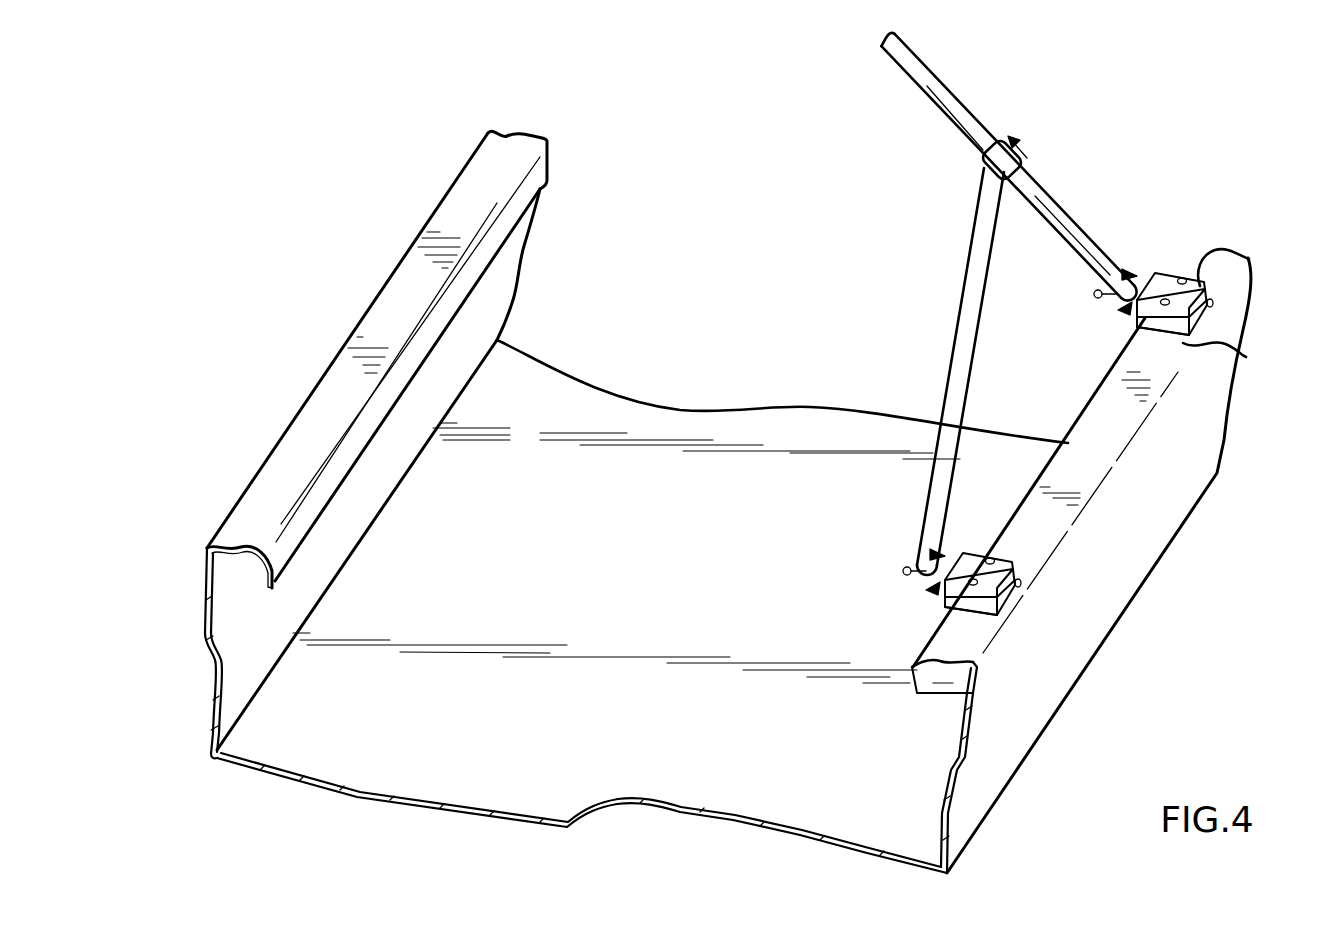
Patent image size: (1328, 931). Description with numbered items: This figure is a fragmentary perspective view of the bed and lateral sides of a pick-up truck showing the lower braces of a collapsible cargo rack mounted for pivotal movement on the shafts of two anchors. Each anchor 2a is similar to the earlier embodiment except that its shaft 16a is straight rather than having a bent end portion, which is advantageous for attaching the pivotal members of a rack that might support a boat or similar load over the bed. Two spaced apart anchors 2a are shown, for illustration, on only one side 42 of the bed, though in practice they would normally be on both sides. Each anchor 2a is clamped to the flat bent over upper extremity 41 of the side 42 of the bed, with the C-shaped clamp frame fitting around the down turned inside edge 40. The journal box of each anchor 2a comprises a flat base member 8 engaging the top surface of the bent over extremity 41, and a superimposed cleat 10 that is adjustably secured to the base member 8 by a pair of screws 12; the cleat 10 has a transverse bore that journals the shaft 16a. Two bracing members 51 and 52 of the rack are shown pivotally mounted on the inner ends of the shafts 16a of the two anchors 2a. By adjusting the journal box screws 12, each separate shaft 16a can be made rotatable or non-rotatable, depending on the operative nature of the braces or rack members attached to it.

The anchor 2a is at (1226, 293).
The flat base member 8 is at (1183, 341).
The cleat 10 is at (1156, 280).
The screws 12 is at (1183, 281).
The straight shaft 16a is at (1097, 298).
The down turned inside edge 40 is at (912, 689).
The flat bent over upper extremity 41 is at (1082, 451).
The side of the bed 42 is at (1035, 646).
The bracing member 51 is at (962, 388).
The bracing member 52 is at (1073, 237).